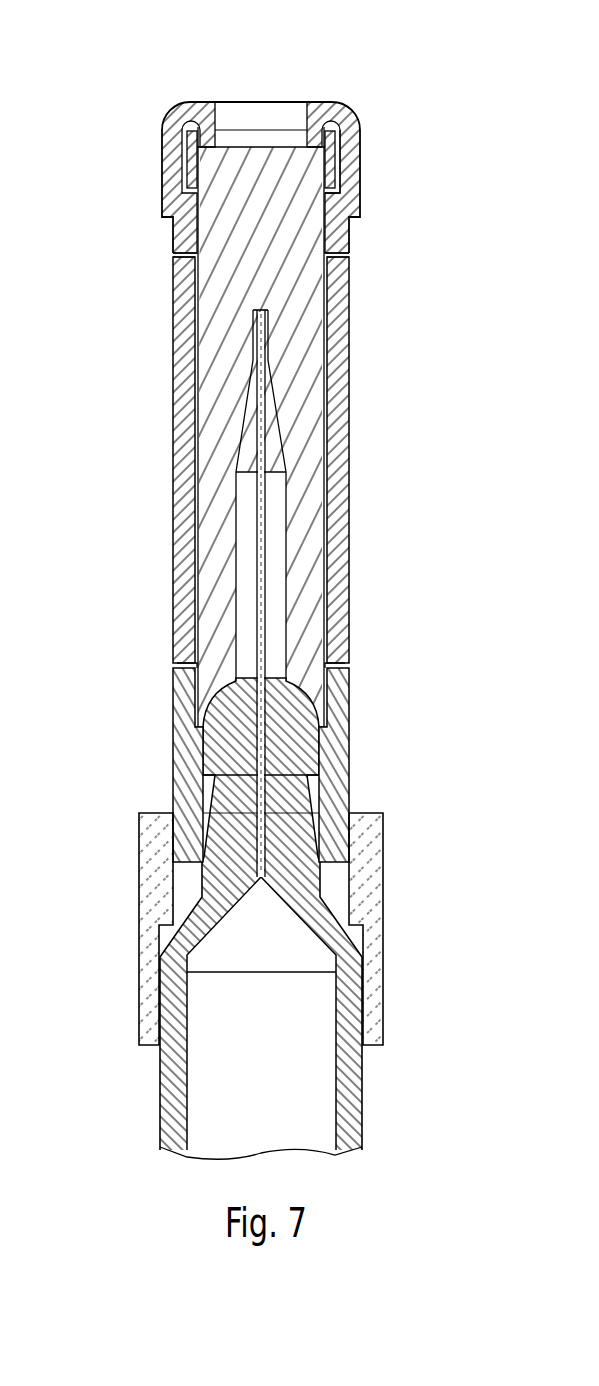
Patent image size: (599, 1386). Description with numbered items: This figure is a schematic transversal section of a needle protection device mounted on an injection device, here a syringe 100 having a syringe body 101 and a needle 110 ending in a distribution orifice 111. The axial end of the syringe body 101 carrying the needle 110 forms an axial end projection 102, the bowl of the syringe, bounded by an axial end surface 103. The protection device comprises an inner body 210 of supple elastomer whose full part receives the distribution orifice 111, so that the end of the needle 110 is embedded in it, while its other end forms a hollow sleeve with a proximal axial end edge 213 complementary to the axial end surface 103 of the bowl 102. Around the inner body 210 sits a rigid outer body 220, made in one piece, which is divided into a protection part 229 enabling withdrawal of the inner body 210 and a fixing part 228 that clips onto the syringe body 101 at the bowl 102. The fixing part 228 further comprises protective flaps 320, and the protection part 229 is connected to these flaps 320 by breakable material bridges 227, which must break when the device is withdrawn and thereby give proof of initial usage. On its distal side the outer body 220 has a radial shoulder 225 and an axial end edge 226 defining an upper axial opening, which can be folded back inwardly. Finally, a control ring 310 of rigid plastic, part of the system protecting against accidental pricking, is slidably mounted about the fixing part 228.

The syringe 100 is at (257, 734).
The syringe body 101 is at (347, 1072).
The axial end projection 102 is at (257, 751).
The axial end surface 103 is at (232, 708).
The needle 110 is at (354, 477).
The distribution orifice 111 is at (258, 310).
The inner body 210 is at (222, 363).
The proximal axial end edge 213 is at (217, 698).
The outer body 220 is at (257, 461).
The radial shoulder 225 is at (337, 177).
The axial end edge 226 is at (257, 156).
The breakable material bridge 227 is at (177, 257).
The fixing part 228 is at (330, 783).
The protection part 229 is at (340, 176).
The control ring 310 is at (158, 872).
The protective flaps 320 is at (257, 477).